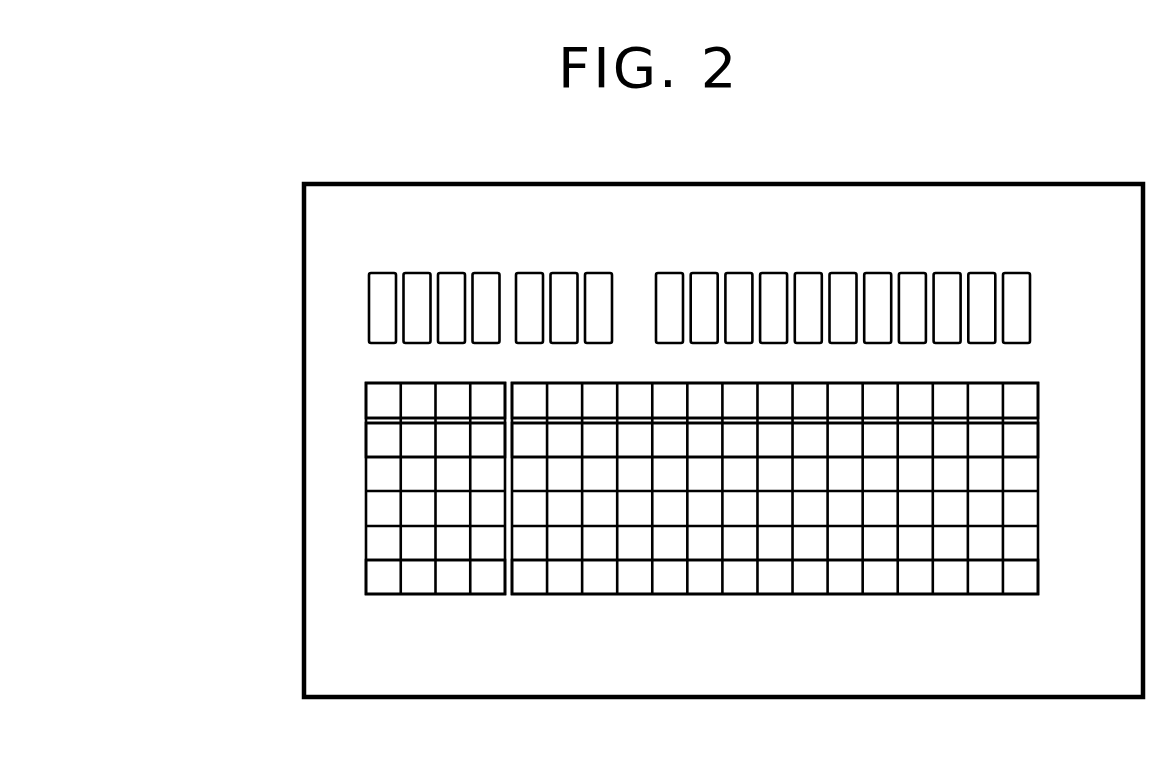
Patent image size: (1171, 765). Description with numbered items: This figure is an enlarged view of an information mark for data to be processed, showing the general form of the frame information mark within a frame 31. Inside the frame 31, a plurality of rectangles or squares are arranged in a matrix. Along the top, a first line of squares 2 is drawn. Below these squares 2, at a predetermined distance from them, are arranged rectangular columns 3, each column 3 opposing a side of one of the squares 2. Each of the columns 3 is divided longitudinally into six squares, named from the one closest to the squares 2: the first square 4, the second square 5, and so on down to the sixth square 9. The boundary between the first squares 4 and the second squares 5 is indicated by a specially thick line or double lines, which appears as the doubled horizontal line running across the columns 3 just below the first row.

The squares 2 is at (366, 254).
The rectangular columns 3 is at (367, 614).
The first square 4 is at (366, 400).
The second square 5 is at (272, 560).
The sixth square 9 is at (366, 575).
The frame 31 is at (304, 228).